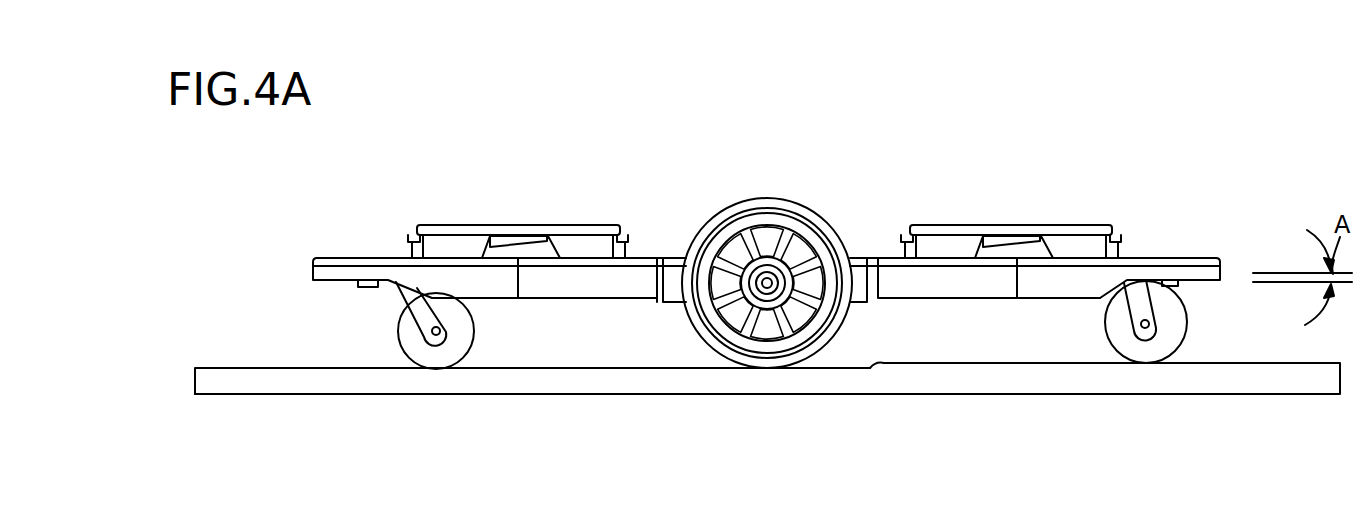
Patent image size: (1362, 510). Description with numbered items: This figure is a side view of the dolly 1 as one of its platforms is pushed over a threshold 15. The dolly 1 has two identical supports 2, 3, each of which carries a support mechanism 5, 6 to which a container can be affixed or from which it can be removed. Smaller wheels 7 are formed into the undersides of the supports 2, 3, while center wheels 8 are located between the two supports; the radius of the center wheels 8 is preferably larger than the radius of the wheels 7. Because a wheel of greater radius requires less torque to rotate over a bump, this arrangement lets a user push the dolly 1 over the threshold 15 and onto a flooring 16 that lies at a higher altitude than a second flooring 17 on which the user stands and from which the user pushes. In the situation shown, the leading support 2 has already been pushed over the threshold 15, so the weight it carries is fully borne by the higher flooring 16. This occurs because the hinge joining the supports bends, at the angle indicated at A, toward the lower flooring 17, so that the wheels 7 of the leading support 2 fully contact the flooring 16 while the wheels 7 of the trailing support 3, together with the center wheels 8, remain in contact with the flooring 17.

The dolly 1 is at (644, 198).
The support 2 is at (1161, 262).
The support 3 is at (362, 258).
The support mechanism 5 is at (996, 225).
The support mechanism 6 is at (518, 225).
The wheels 7 is at (399, 363).
The center wheels 8 is at (814, 213).
The threshold 15 is at (871, 372).
The flooring 16 is at (1074, 364).
The flooring 17 is at (592, 368).